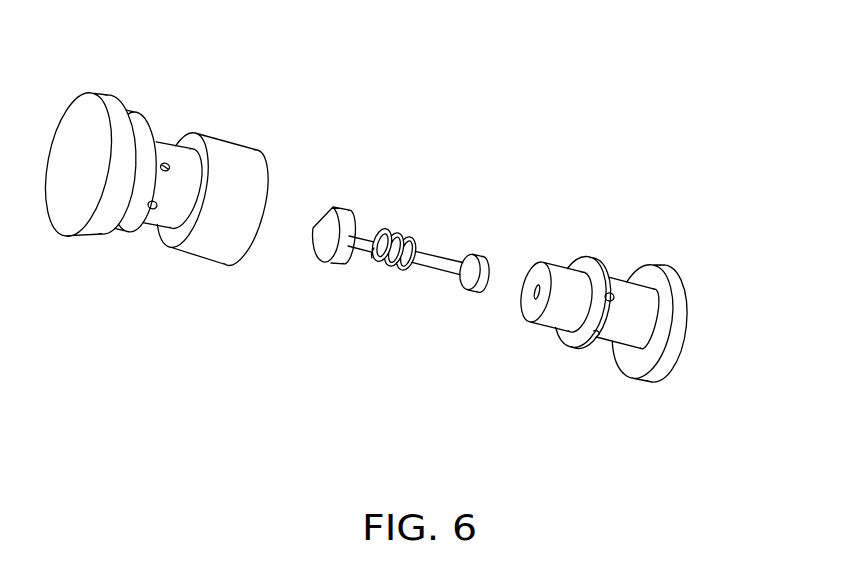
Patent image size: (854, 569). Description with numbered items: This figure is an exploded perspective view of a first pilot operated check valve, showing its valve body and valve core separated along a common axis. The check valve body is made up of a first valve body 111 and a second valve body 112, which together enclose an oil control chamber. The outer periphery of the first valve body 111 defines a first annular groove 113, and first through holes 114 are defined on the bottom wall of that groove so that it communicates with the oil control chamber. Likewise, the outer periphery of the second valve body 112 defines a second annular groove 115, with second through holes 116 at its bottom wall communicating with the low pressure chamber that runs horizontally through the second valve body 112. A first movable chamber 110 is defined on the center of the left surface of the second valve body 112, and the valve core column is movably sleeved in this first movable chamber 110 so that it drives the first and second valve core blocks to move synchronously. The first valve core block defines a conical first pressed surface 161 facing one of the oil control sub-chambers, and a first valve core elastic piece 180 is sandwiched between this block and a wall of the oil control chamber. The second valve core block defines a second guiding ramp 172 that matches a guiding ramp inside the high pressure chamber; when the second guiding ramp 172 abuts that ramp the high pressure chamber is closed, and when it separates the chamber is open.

The first movable chamber 110 is at (538, 287).
The first valve body 111 is at (231, 158).
The second valve body 112 is at (682, 283).
The first annular groove 113 is at (168, 132).
The first through holes 114 is at (153, 208).
The second annular groove 115 is at (617, 267).
The second through holes 116 is at (612, 302).
The first pressed surface 161 is at (332, 227).
The second guiding ramp 172 is at (472, 263).
The first valve core elastic piece 180 is at (400, 242).